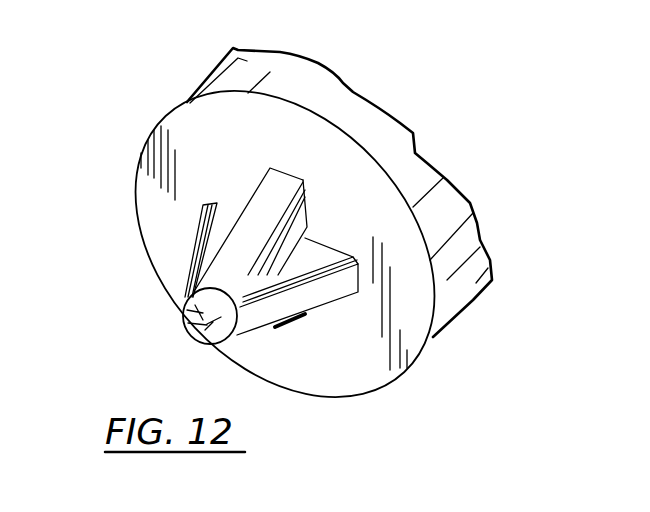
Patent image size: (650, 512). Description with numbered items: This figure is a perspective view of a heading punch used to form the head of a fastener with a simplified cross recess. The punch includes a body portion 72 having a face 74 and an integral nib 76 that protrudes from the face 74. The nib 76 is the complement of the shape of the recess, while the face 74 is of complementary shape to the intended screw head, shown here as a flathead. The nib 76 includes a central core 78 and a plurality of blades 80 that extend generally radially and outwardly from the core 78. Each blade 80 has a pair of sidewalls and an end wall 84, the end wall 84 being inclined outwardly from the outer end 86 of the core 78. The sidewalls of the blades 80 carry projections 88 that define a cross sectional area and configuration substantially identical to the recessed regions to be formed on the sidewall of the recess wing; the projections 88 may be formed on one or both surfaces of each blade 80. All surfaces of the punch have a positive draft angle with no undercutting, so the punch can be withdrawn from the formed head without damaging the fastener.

The body portion 72 is at (345, 108).
The face 74 is at (207, 108).
The nib 76 is at (182, 262).
The central core 78 is at (282, 250).
The blades 80 is at (274, 193).
The end wall 84 is at (252, 212).
The outer end 86 is at (187, 323).
The projections 88 is at (217, 232).